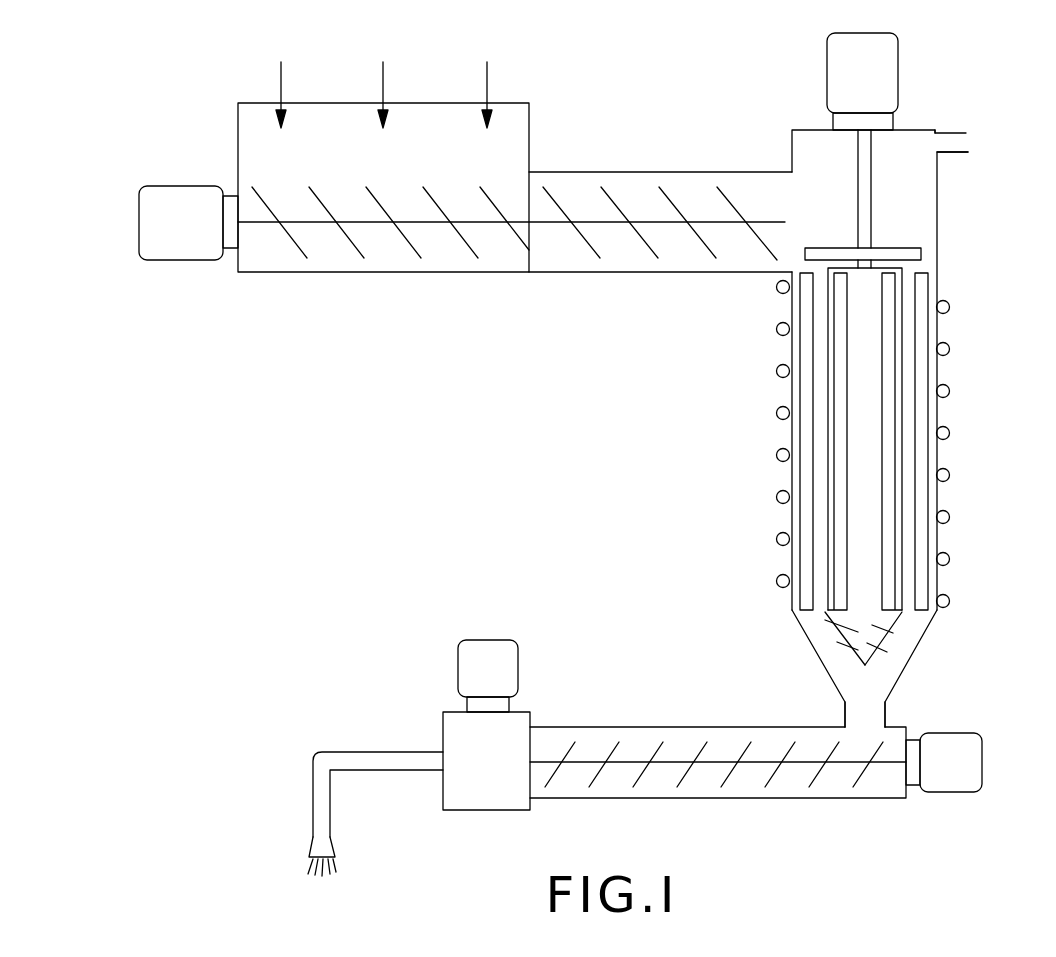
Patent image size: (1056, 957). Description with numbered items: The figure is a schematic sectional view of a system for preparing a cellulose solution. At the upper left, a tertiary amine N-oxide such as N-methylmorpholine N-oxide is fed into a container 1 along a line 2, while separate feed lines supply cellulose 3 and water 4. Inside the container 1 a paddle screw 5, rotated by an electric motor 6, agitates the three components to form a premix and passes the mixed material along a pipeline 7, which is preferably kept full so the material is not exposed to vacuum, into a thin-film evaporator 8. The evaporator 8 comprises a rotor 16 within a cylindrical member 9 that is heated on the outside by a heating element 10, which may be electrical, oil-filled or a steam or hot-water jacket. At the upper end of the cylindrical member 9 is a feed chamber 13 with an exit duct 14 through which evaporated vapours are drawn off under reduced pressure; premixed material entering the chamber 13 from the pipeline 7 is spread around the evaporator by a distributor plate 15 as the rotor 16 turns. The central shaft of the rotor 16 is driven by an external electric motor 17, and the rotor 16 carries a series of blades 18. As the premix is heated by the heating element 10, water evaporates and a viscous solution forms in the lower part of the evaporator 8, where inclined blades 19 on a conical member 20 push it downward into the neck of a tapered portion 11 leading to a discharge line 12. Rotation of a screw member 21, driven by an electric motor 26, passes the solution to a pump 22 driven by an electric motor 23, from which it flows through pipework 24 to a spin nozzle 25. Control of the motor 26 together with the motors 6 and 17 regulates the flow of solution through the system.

The container 1 is at (529, 118).
The line 2 is at (281, 68).
The feed line for cellulose 3 is at (383, 68).
The feed line for water 4 is at (487, 60).
The paddle screw 5 is at (475, 250).
The electric motor 6 is at (178, 252).
The pipeline 7 is at (623, 272).
The thin-film evaporator 8 is at (985, 332).
The cylindrical member 9 is at (938, 410).
The heating element 10 is at (950, 303).
The tapered portion 11 is at (915, 650).
The discharge line 12 is at (763, 727).
The feed chamber 13 is at (928, 197).
The exit duct 14 is at (962, 142).
The distributor plate 15 is at (910, 250).
The rotor 16 is at (858, 420).
The external electric motor 17 is at (893, 57).
The blades 18 is at (802, 557).
The inclined blades 19 is at (890, 632).
The conical member 20 is at (857, 630).
The screw member 21 is at (730, 775).
The pump 22 is at (483, 805).
The electric motor 23 is at (492, 645).
The pipework 24 is at (370, 758).
The spin nozzle 25 is at (308, 843).
The electric motor 26 is at (973, 757).